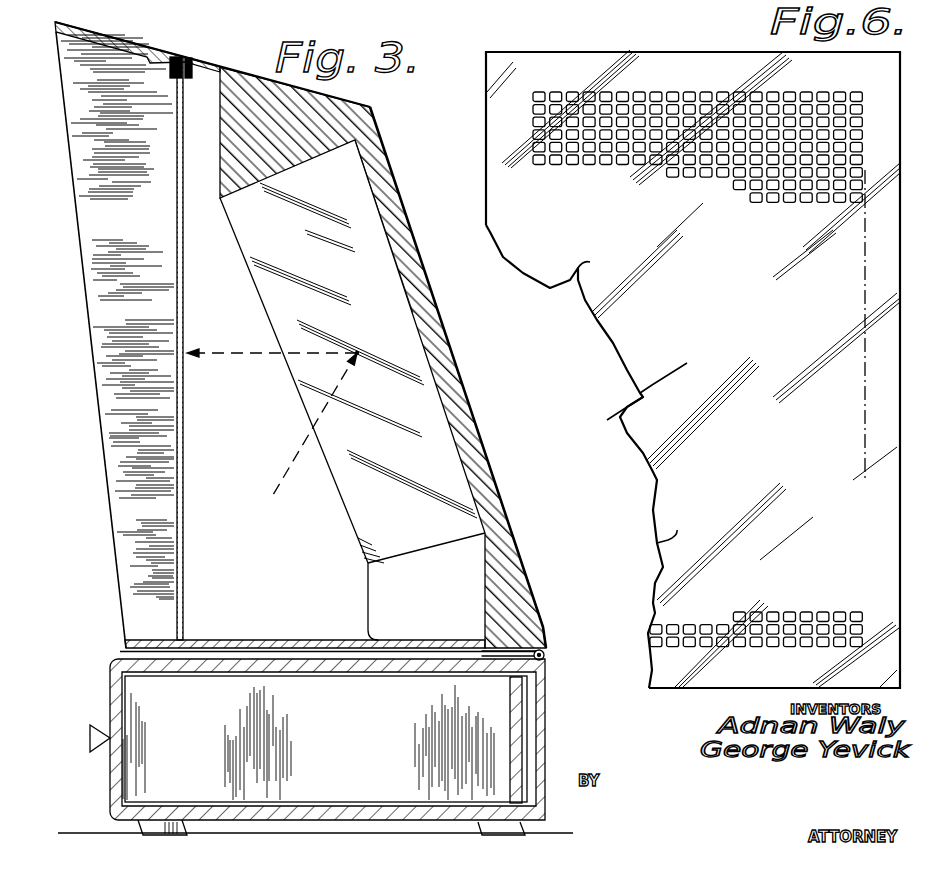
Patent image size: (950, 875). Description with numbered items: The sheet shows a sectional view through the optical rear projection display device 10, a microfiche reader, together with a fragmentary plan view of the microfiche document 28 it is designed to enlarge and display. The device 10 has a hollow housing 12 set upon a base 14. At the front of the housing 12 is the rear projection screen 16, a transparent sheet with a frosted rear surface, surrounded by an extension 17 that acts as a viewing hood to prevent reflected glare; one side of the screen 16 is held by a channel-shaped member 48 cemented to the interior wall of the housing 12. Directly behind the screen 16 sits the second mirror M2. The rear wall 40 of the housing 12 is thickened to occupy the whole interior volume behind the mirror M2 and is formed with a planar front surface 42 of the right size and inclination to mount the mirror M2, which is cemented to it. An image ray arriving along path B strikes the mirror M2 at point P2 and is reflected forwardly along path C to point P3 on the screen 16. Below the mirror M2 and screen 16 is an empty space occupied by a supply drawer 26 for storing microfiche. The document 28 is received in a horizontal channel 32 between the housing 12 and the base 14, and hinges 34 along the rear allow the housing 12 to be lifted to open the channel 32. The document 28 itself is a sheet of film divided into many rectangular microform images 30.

In FIG. 3, the optical rear projection display device 10 is at (85, 422).
In FIG. 3, the housing 12 is at (385, 152).
In FIG. 3, the base 14 is at (545, 730).
In FIG. 3, the rear projection screen 16 is at (176, 266).
In FIG. 3, the extension 17 is at (110, 47).
In FIG. 3, the supply drawer 26 is at (110, 703).
In FIG. 6, the microfiche document 28 is at (678, 45).
In FIG. 6, the microform images 30 is at (608, 90).
In FIG. 3, the horizontal channel 32 is at (320, 653).
In FIG. 3, the hinges 34 is at (545, 655).
In FIG. 3, the rear wall 40 is at (480, 438).
In FIG. 3, the planar front surface 42 is at (413, 313).
In FIG. 3, the channel-shaped member 48 is at (152, 60).
In FIG. 3, the second mirror M2 is at (358, 242).
In FIG. 3, the point P2 is at (368, 339).
In FIG. 3, the point P3 is at (189, 356).
In FIG. 3, the path B is at (290, 470).
In FIG. 3, the path C is at (265, 357).